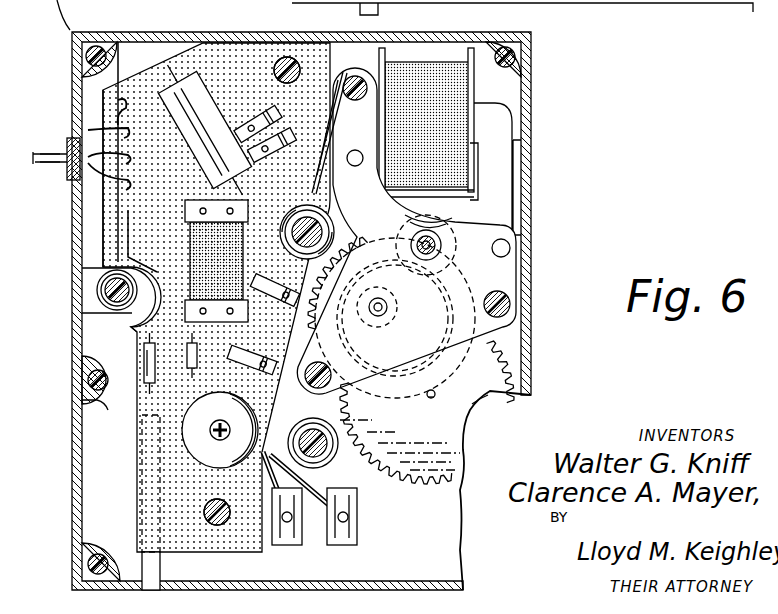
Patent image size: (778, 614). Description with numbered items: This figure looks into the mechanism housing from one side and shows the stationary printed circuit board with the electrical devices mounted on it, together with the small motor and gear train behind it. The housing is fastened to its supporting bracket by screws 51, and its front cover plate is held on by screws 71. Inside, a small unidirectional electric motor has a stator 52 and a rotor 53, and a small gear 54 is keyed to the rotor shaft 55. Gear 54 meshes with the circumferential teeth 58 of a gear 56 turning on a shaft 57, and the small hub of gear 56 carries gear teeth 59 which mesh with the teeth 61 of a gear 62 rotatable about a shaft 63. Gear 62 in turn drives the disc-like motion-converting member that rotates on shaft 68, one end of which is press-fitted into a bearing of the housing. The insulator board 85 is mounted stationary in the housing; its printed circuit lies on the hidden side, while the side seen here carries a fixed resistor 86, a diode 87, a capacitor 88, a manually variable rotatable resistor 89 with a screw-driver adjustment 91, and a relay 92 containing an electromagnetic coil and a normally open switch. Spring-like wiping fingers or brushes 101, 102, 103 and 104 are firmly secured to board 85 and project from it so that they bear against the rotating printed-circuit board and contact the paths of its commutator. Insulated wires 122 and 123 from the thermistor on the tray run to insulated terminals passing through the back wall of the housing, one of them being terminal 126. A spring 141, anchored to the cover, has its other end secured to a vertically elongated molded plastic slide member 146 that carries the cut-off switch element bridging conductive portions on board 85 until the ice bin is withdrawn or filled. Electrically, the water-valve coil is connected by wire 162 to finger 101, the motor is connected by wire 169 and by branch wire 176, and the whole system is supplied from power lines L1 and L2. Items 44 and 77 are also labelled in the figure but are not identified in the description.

The bearing 44 is at (330, 458).
The screws 51 is at (84, 383).
The stator 52 is at (436, 62).
The rotor 53 is at (440, 218).
The small gear 54 is at (455, 258).
The shaft 55 is at (432, 245).
The gear 56 is at (348, 282).
The shaft 57 is at (379, 300).
The circumferential teeth 58 is at (343, 218).
The gear teeth 59 is at (364, 296).
The teeth 61 is at (496, 343).
The gear 62 is at (493, 398).
The shaft 63 is at (431, 399).
The shaft 68 is at (299, 222).
The screws 71 is at (97, 46).
The bearing 77 is at (100, 290).
The insulator board 85 is at (146, 72).
The fixed resistor 86 is at (144, 353).
The diode 87 is at (195, 355).
The capacitor 88 is at (203, 110).
The manually variable rotatable resistor 89 is at (233, 452).
The screw driver adjustment 91 is at (212, 437).
The relay 92 is at (195, 240).
The wiping finger 101 is at (268, 118).
The wiping finger 102 is at (260, 164).
The wiping finger 103 is at (287, 284).
The wiping finger 104 is at (256, 355).
The insulated wire 122 is at (115, 110).
The insulated wire 123 is at (116, 252).
The insulated terminal 126 is at (286, 525).
The spring 141 is at (160, 570).
The slide member 146 is at (140, 470).
The wire 162 is at (69, 150).
The wire connection 169 is at (325, 146).
The branch wire 176 is at (328, 122).
The power line L1 is at (55, 162).
The power line L2 is at (60, 170).